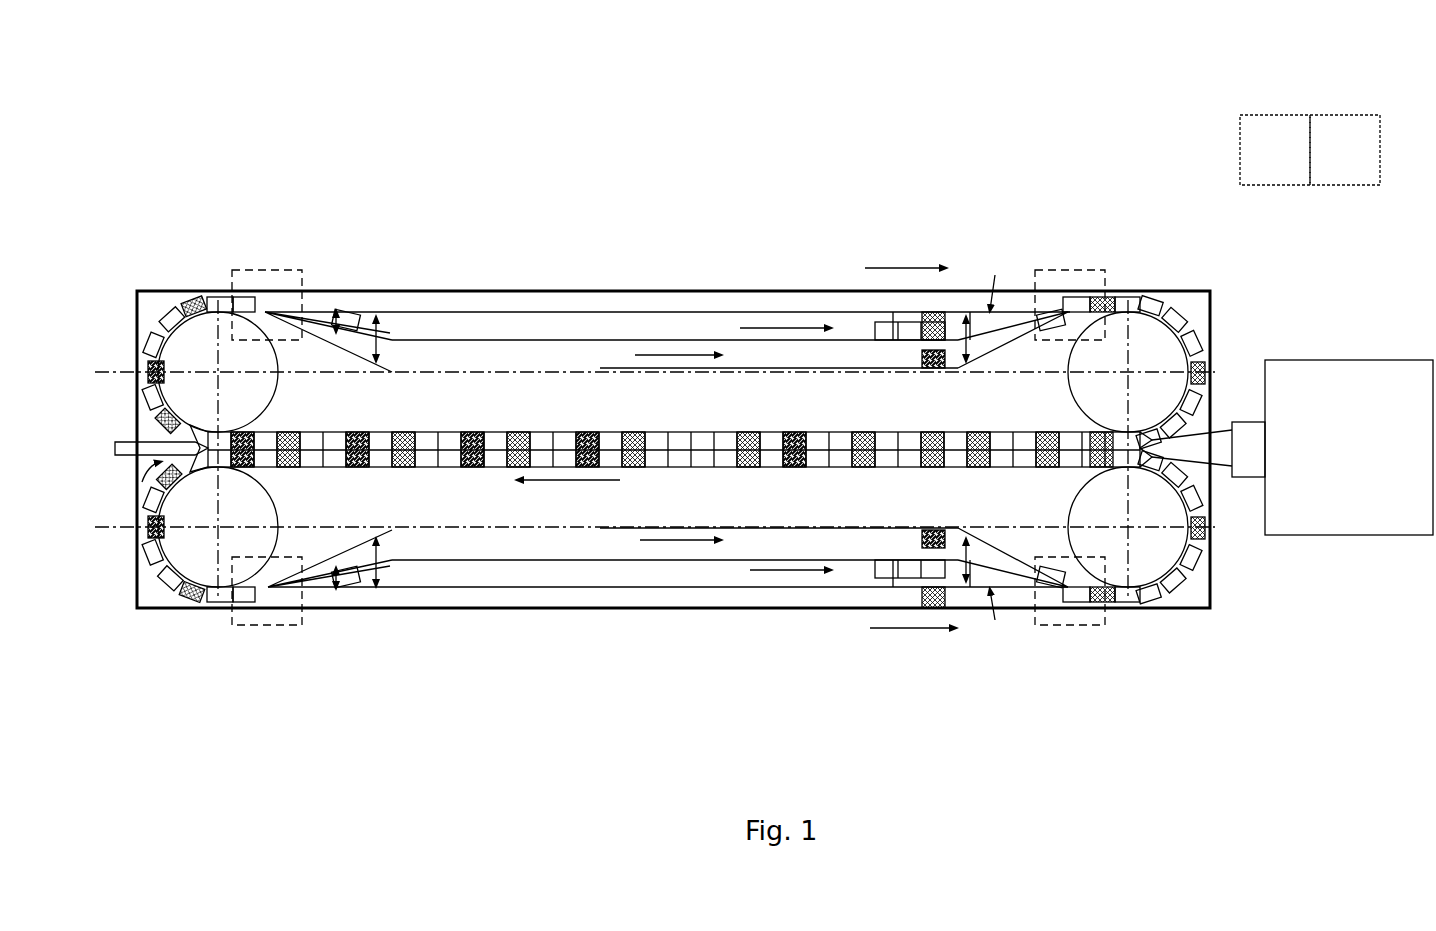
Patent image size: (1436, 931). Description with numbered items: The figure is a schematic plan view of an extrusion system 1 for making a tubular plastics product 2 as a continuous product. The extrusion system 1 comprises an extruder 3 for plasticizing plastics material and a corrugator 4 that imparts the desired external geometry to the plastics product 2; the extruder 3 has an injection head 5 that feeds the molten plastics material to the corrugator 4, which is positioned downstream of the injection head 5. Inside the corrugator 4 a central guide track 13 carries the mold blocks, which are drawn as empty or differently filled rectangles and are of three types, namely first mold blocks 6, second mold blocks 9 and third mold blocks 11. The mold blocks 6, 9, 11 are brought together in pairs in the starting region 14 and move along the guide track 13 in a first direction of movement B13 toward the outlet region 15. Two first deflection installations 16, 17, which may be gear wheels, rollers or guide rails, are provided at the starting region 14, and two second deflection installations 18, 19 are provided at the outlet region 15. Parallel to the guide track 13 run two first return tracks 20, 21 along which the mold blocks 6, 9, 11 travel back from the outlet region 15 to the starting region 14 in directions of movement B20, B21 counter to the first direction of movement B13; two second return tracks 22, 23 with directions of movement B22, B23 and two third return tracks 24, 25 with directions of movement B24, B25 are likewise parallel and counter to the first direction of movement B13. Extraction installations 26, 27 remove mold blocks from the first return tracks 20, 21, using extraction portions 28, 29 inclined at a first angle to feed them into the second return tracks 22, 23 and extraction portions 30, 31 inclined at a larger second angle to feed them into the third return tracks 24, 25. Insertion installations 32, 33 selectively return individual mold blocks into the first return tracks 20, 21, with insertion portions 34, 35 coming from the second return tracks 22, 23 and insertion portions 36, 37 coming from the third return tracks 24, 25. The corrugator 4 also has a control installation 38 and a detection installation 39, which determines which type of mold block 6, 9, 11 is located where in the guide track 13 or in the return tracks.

The extrusion system 1 is at (601, 95).
The plastics product 2 is at (115, 445).
The extruder 3 is at (1390, 535).
The corrugator 4 is at (538, 286).
The injection head 5 is at (1245, 422).
The first mold block 6 is at (160, 300).
The second mold block 9 is at (192, 300).
The third mold block 11 is at (140, 372).
The guide track 13 is at (730, 455).
The starting region 14 is at (1215, 484).
The outlet region 15 is at (142, 482).
The first deflection installation 16 is at (1175, 345).
The first deflection installation 17 is at (1185, 565).
The second deflection installation 18 is at (222, 312).
The second deflection installation 19 is at (210, 587).
The first return track 20 is at (825, 312).
The first return track 21 is at (843, 590).
The second return track 22 is at (745, 340).
The second return track 23 is at (740, 560).
The third return track 24 is at (610, 368).
The third return track 25 is at (613, 530).
The extraction installation 26 is at (262, 270).
The extraction installation 27 is at (262, 625).
The extraction portion 28 is at (318, 322).
The extraction portion 29 is at (320, 585).
The extraction portion 30 is at (348, 347).
The extraction portion 31 is at (345, 552).
The insertion installation 32 is at (1100, 270).
The insertion installation 33 is at (1082, 625).
The insertion portion 34 is at (1060, 312).
The insertion portion 35 is at (1065, 587).
The insertion portion 36 is at (1057, 340).
The insertion portion 37 is at (1057, 560).
The control installation 38 is at (1366, 169).
The detection installation 39 is at (1296, 169).
The first direction of movement B13 is at (565, 481).
The direction of movement B20 is at (905, 252).
The direction of movement B21 is at (912, 646).
The direction of movement B22 is at (785, 328).
The direction of movement B23 is at (778, 570).
The direction of movement B24 is at (655, 355).
The direction of movement B25 is at (667, 542).